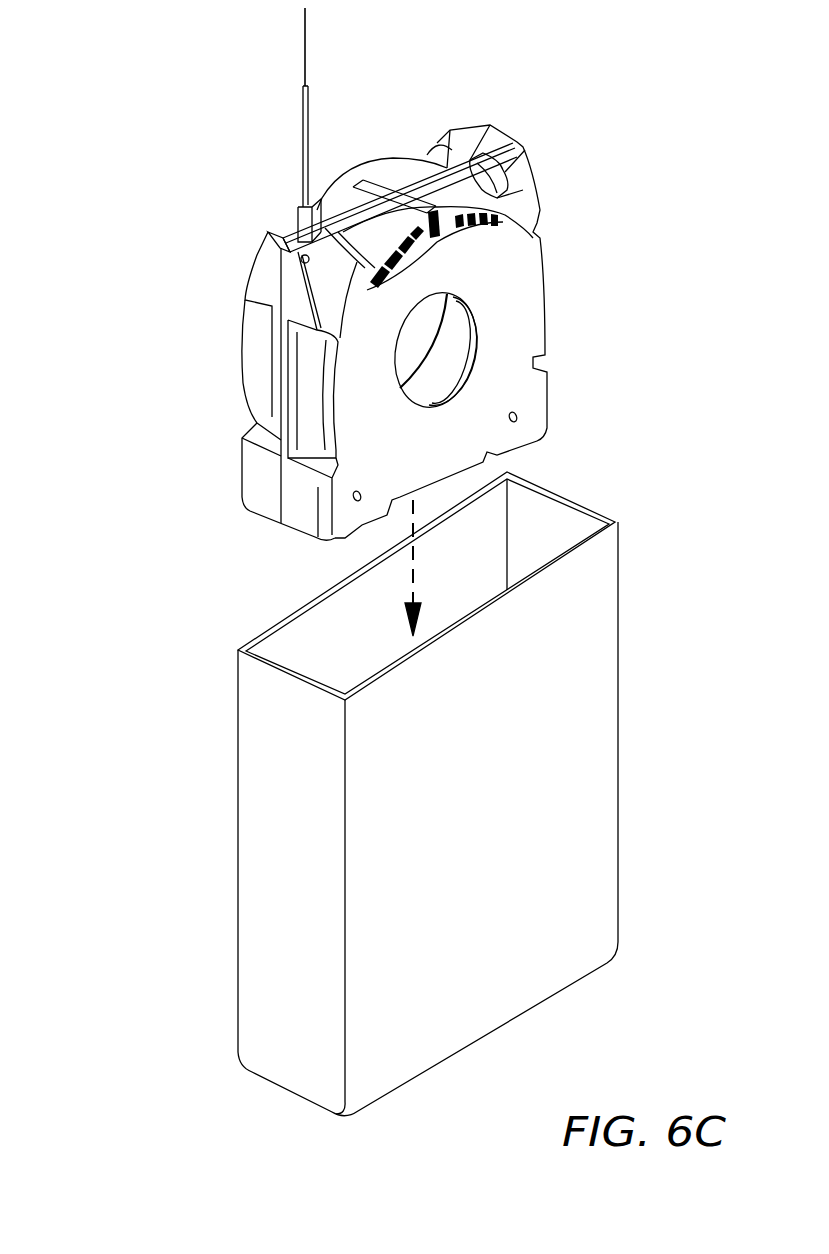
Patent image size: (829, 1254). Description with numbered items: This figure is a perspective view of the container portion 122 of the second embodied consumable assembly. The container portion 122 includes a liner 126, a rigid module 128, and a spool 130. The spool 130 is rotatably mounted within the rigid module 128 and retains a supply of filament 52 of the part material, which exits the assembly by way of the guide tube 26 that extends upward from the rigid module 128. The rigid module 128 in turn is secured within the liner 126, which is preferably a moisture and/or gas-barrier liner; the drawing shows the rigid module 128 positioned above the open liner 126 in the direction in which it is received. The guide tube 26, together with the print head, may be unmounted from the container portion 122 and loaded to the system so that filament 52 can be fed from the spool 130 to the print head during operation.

The container portion 122 is at (103, 289).
The filament 52 is at (302, 33).
The guide tube 26 is at (302, 123).
The rigid module 128 is at (536, 320).
The spool 130 is at (480, 232).
The liner 126 is at (595, 637).